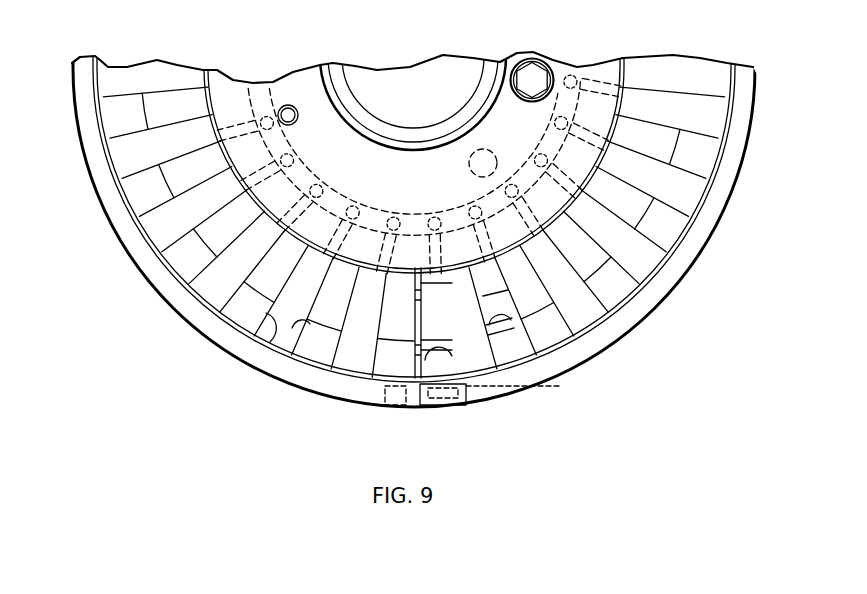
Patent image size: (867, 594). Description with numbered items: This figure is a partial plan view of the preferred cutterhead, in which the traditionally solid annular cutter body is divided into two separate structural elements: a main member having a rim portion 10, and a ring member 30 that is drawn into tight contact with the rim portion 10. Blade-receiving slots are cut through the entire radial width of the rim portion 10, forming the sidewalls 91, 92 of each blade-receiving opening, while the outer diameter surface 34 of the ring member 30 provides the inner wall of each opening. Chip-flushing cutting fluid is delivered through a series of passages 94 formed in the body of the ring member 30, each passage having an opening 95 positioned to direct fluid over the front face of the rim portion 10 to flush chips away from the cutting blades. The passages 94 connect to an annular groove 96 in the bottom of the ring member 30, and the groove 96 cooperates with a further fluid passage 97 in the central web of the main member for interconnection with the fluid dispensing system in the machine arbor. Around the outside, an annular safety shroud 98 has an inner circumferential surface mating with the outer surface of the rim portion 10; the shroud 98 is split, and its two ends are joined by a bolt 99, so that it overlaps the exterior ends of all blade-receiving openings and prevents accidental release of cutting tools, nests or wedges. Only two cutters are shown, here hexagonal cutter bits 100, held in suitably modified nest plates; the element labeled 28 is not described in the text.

The rim portion 10 is at (663, 135).
The friction segment 28 is at (508, 306).
The ring member 30 is at (318, 88).
The outer diameter surface 34 is at (266, 217).
The sidewall 91 is at (270, 340).
The sidewall 92 is at (295, 328).
The passages 94 is at (318, 184).
The opening 95 is at (382, 277).
The annular groove 96 is at (458, 214).
The fluid passage 97 is at (285, 105).
The annular safety shroud 98 is at (680, 270).
The bolt 99 is at (434, 397).
The hexagonal cutter bits 100 is at (507, 318).